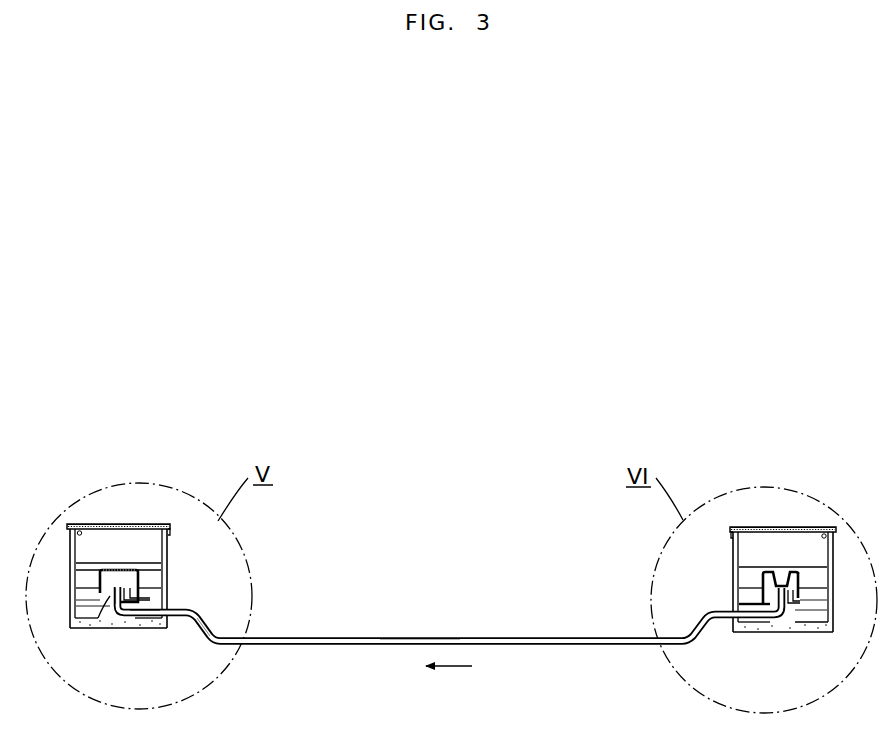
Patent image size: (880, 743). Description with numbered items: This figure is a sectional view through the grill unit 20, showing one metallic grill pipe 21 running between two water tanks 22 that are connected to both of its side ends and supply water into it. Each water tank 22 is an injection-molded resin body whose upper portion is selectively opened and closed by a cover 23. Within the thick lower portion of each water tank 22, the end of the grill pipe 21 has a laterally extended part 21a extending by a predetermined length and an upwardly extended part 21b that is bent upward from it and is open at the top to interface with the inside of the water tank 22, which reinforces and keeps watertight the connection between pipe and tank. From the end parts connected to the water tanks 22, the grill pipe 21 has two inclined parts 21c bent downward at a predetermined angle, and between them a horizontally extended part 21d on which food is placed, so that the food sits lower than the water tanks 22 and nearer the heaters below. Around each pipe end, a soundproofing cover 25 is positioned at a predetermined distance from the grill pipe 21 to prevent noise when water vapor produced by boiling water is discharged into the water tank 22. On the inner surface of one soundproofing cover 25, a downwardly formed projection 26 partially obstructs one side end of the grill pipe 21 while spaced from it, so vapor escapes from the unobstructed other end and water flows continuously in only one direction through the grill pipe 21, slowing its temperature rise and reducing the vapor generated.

The grill unit 20 is at (486, 467).
The grill pipe 21 is at (496, 630).
The laterally extended part 21a is at (148, 619).
The upwardly extended part 21b is at (110, 597).
The inclined part 21c is at (206, 621).
The horizontally extended part 21d is at (418, 636).
The water tank 22 is at (170, 583).
The cover 23 is at (108, 524).
The soundproofing cover 25 is at (122, 569).
The projection 26 is at (760, 572).